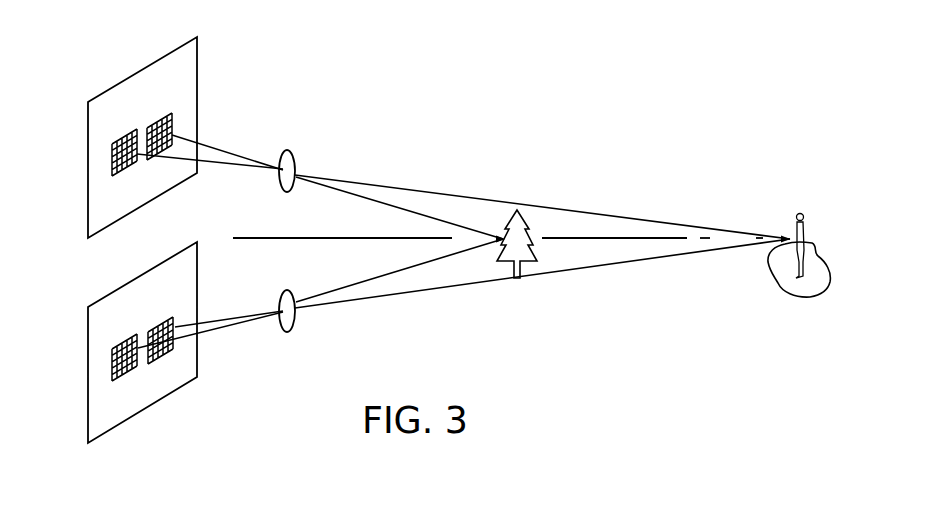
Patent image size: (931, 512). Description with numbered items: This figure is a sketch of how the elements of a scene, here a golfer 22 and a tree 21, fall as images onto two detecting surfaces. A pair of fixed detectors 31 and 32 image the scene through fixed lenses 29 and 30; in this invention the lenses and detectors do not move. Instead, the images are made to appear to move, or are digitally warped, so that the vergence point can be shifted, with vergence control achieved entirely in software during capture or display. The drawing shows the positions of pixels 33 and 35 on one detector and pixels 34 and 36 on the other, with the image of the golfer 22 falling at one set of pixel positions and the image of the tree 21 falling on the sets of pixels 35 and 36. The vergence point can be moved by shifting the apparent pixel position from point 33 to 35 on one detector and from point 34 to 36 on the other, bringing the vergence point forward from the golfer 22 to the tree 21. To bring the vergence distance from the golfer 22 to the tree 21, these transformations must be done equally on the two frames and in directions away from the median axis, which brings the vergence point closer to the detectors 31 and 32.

The tree 21 is at (517, 210).
The golfer 22 is at (800, 213).
The lens 29 is at (285, 150).
The lens 30 is at (288, 332).
The detector 31 is at (182, 47).
The detector 32 is at (87, 407).
The pixels 33 is at (148, 125).
The pixels 34 is at (150, 328).
The pixels 35 is at (112, 155).
The pixels 36 is at (112, 360).